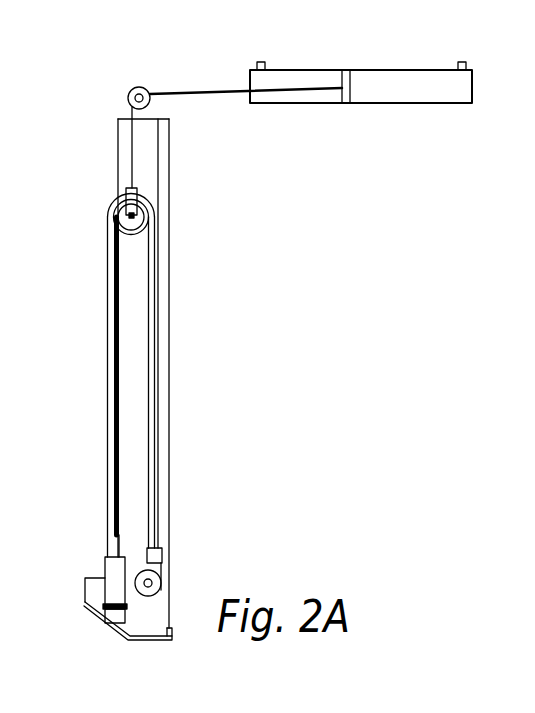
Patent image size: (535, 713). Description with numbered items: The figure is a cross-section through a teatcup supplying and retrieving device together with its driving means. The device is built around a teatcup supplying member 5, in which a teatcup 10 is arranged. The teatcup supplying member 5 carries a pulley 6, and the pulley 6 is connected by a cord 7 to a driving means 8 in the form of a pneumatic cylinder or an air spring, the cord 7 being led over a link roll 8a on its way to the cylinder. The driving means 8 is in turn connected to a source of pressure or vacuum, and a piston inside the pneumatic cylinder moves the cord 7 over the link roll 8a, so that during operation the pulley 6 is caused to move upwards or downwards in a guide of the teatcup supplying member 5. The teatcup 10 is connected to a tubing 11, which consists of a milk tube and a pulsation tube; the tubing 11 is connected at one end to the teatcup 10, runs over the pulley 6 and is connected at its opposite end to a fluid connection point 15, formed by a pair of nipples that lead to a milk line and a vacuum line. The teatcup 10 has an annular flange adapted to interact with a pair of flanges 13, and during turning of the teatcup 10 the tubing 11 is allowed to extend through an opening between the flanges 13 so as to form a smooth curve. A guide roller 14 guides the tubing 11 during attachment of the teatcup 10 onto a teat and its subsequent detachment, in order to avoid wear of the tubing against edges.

The teatcup supplying member 5 is at (132, 147).
The pulley 6 is at (126, 189).
The cord 7 is at (193, 82).
The driving means 8 is at (388, 70).
The link roll 8a is at (137, 86).
The teatcup 10 is at (104, 568).
The tubing 11 is at (108, 297).
The flanges 13 is at (130, 638).
The guide roller 14 is at (160, 578).
The fluid connection point 15 is at (157, 553).